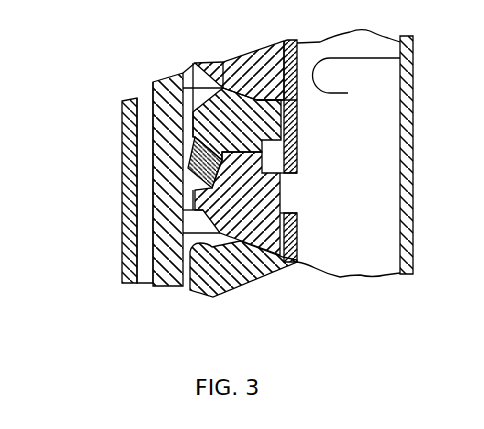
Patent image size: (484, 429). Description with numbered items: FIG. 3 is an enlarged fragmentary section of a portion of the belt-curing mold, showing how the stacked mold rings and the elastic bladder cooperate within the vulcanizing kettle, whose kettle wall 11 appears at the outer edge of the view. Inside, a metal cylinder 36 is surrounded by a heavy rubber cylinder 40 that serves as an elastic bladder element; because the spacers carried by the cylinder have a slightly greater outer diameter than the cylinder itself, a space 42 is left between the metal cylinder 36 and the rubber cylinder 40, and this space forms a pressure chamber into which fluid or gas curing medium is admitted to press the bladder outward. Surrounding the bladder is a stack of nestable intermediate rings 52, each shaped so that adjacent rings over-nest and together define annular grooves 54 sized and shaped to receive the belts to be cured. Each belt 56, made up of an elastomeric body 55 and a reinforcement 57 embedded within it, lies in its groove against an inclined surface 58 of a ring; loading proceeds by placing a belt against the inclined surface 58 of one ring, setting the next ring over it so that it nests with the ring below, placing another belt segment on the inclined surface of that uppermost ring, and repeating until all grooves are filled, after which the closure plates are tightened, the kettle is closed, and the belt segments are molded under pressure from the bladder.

The kettle wall 11 is at (355, 153).
The cylinder 36 is at (130, 117).
The rubber cylinder 40 is at (160, 163).
The space 42 is at (145, 102).
The intermediate rings 52 is at (270, 207).
The annular grooves 54 is at (200, 84).
The elastomeric body 55 is at (195, 129).
The belt 56 is at (213, 148).
The reinforcement 57 is at (143, 183).
The inclined surface 58 is at (186, 250).